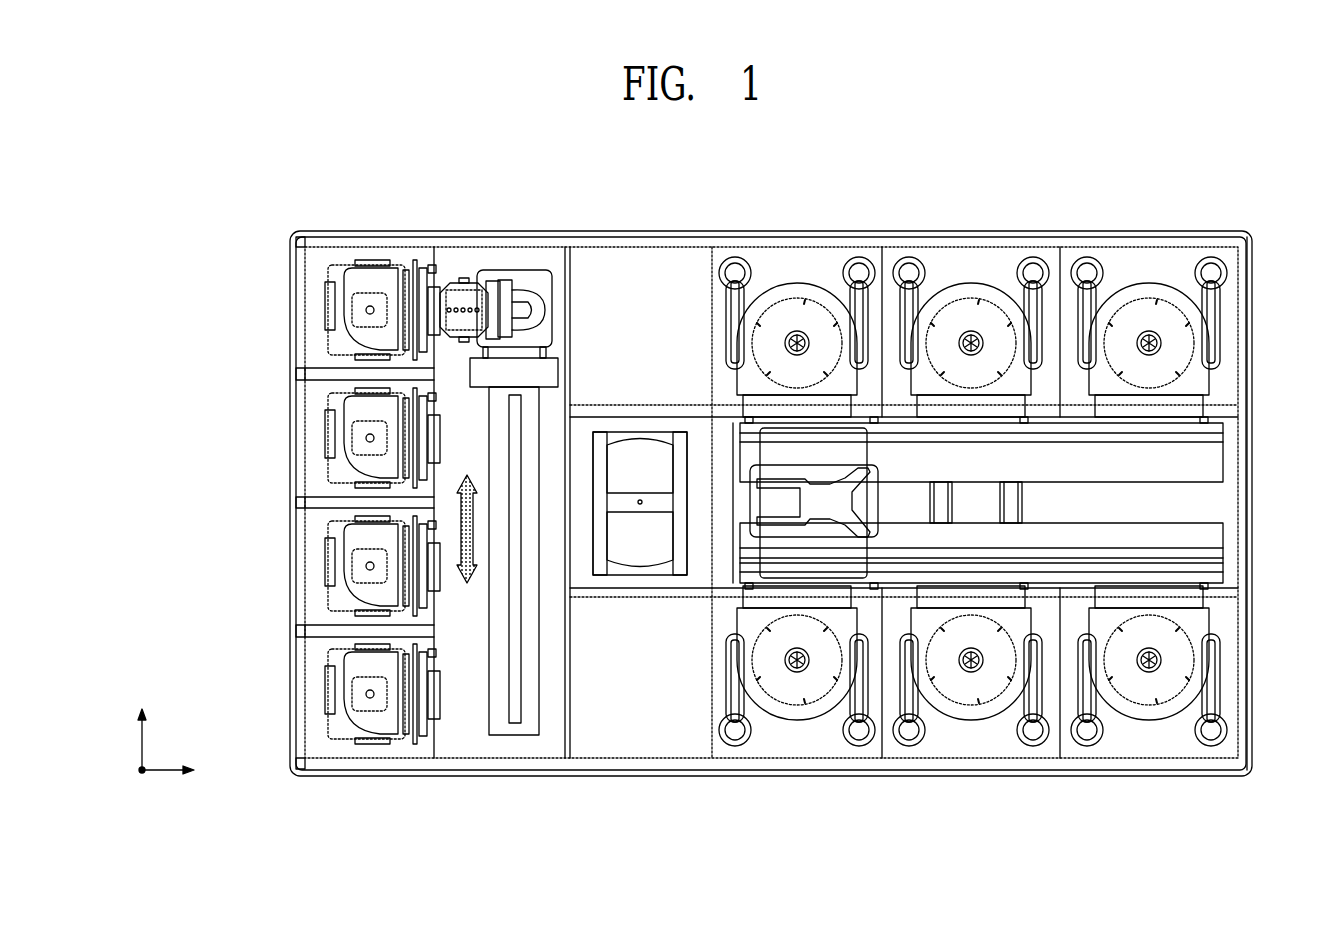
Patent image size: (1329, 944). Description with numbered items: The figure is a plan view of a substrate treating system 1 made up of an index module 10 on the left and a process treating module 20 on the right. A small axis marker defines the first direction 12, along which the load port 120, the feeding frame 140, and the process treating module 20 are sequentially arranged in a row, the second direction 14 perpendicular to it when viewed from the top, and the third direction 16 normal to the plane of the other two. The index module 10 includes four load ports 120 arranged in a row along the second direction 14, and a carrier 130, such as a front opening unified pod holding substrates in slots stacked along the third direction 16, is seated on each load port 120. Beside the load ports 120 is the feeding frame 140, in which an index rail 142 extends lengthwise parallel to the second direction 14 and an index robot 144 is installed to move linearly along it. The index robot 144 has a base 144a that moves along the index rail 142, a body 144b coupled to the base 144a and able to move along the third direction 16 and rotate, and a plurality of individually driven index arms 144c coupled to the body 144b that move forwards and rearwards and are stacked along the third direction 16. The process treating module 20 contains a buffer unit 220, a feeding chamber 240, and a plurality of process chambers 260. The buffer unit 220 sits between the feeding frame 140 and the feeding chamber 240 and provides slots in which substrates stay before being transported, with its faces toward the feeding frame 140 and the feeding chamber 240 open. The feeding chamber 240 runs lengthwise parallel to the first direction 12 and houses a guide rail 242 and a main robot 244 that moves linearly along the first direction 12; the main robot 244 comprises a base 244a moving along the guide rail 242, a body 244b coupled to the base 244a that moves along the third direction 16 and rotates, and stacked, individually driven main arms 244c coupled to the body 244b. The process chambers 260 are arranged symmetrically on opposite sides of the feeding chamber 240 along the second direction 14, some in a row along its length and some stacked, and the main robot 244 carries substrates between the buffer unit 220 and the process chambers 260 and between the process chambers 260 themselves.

The substrate treating system 1 is at (1242, 183).
The index module 10 is at (375, 836).
The first direction 12 is at (170, 772).
The second direction 14 is at (142, 742).
The third direction 16 is at (142, 776).
The process treating module 20 is at (1290, 836).
The load port 120 is at (393, 762).
The carrier 130 is at (368, 276).
The feeding frame 140 is at (463, 762).
The index rail 142 is at (532, 403).
The index robot 144 is at (400, 191).
The base 144a is at (538, 280).
The body 144b is at (491, 288).
The index arm 144c is at (455, 305).
The buffer unit 220 is at (645, 582).
The feeding chamber 240 is at (1253, 541).
The guide rail 242 is at (1045, 560).
The main robot 244 is at (708, 191).
The base 244a is at (837, 440).
The body 244b is at (808, 472).
The main arm 244c is at (787, 482).
The process chamber 260 is at (797, 762).